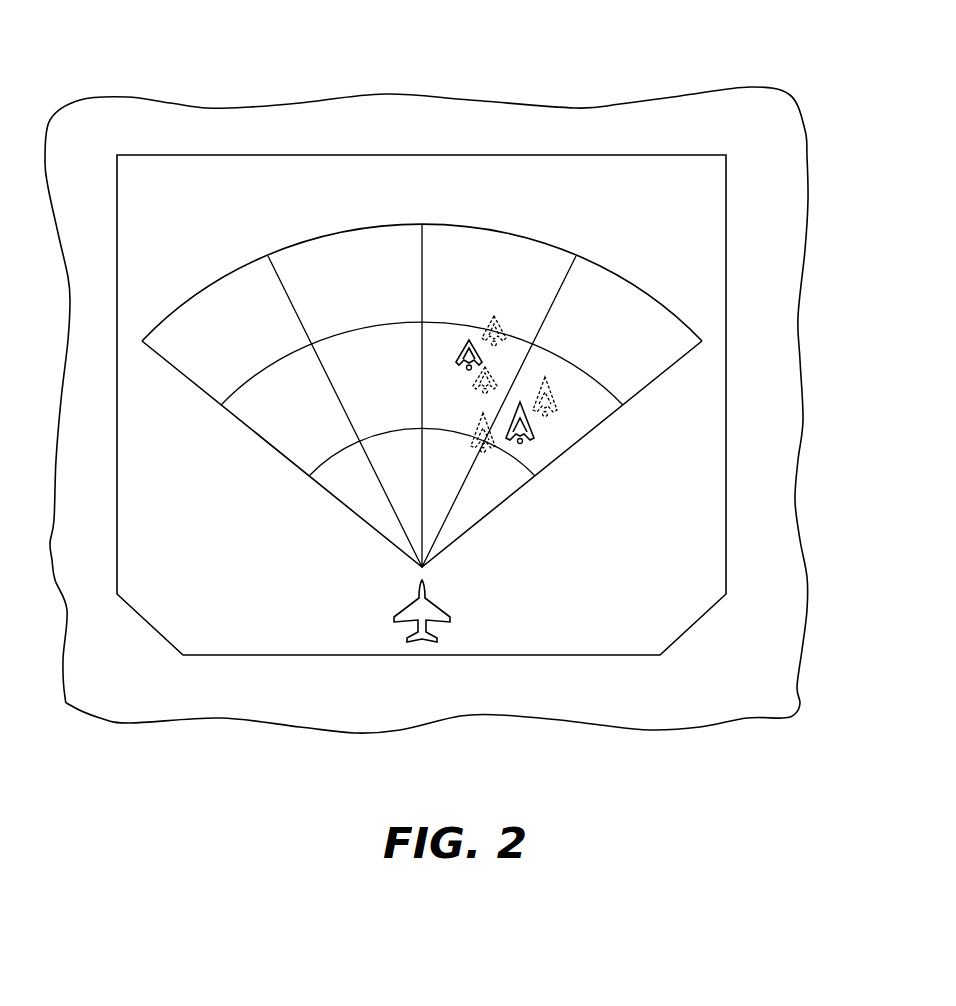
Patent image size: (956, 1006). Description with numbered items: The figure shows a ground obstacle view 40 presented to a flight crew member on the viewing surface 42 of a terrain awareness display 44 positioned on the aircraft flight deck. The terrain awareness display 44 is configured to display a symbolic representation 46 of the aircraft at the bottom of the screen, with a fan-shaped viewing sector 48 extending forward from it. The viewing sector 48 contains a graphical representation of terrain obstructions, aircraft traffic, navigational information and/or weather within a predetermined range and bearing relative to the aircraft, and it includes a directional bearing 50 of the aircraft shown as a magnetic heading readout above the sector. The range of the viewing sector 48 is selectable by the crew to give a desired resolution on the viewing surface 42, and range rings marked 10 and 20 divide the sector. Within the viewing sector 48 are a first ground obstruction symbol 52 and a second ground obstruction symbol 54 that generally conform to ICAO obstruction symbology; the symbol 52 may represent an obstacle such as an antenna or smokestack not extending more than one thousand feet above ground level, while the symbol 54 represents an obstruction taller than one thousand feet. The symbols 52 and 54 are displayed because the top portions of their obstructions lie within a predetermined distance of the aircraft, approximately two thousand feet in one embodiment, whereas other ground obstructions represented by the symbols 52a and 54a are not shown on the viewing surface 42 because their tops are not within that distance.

The ground obstacle view 40 is at (799, 67).
The viewing surface 42 is at (663, 223).
The terrain awareness display 44 is at (808, 155).
The symbolic representation of the aircraft 46 is at (445, 602).
The viewing sector 48 is at (627, 446).
The directional bearing 50 is at (338, 196).
The first ground obstruction symbol 52 is at (463, 352).
The ground obstruction symbol 52a is at (488, 318).
The second ground obstruction symbol 54 is at (536, 432).
The ground obstruction symbol 54a is at (475, 425).
The 10 nm range ring 10 is at (425, 462).
The 20 nm range ring 20 is at (424, 374).